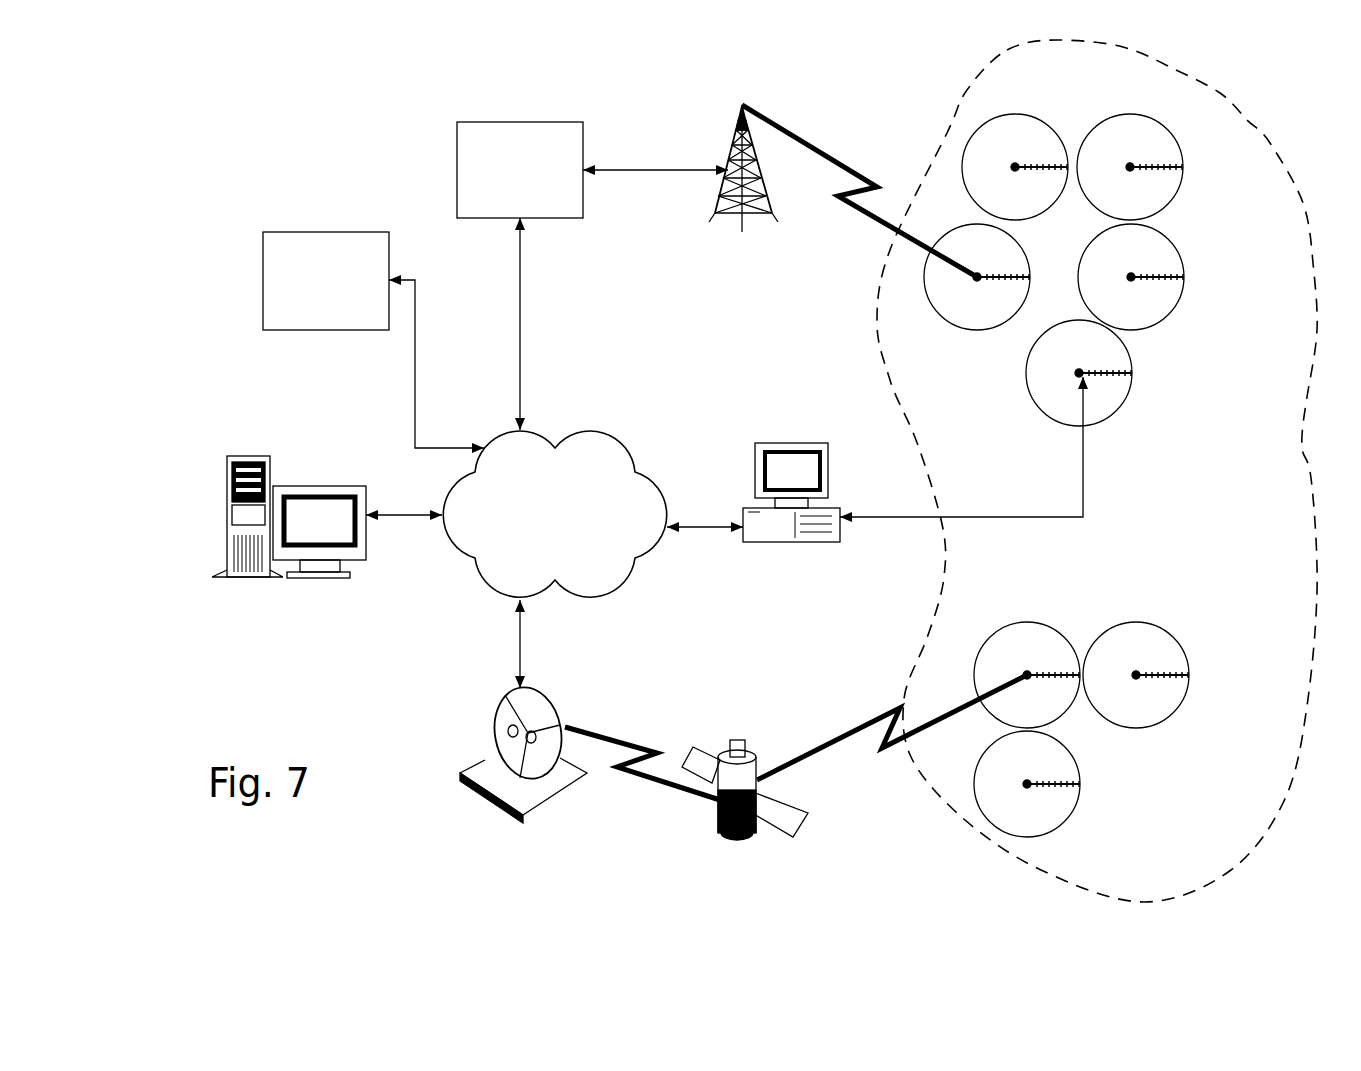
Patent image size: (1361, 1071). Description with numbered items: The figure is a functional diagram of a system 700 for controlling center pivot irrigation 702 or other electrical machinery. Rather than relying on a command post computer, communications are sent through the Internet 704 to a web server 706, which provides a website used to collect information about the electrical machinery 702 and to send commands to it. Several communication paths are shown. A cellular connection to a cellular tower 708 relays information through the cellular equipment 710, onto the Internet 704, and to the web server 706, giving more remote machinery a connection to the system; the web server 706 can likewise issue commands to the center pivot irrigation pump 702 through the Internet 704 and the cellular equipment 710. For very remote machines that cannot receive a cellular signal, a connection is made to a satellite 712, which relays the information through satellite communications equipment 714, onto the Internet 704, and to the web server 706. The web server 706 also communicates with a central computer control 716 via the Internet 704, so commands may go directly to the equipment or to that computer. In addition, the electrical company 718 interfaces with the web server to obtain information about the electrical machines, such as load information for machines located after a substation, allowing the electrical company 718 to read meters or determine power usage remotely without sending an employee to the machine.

The system 700 is at (273, 142).
The center pivot irrigation 702 is at (977, 277).
The Internet 704 is at (590, 430).
The web server 706 is at (240, 456).
The cellular tower 708 is at (715, 215).
The cellular equipment 710 is at (457, 165).
The satellite 712 is at (734, 745).
The satellite communications equipment 714 is at (497, 727).
The central computer control 716 is at (792, 443).
The electrical company 718 is at (263, 280).